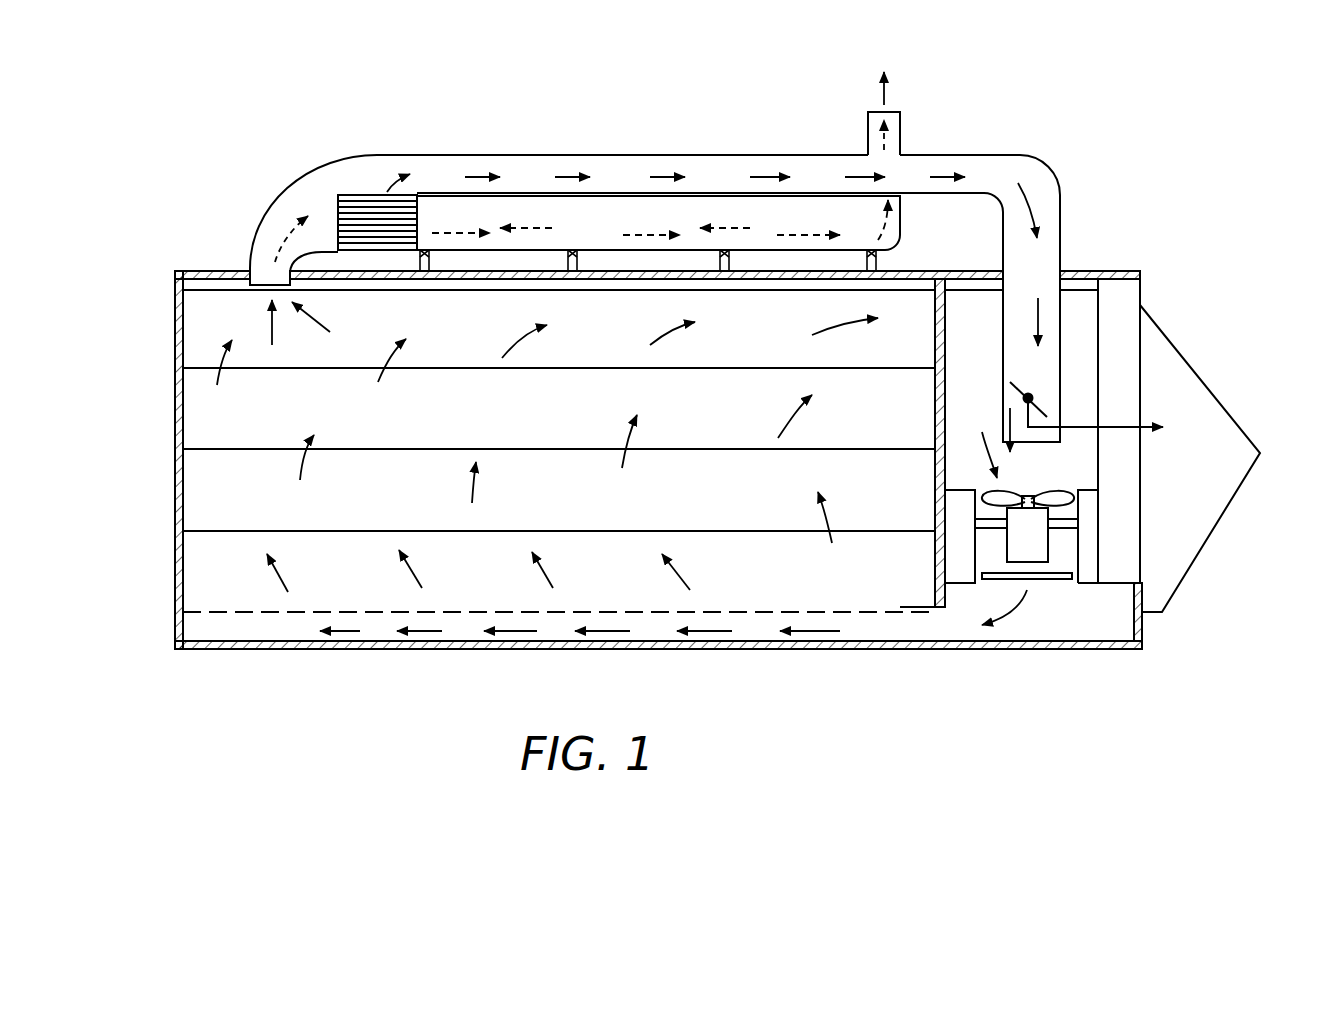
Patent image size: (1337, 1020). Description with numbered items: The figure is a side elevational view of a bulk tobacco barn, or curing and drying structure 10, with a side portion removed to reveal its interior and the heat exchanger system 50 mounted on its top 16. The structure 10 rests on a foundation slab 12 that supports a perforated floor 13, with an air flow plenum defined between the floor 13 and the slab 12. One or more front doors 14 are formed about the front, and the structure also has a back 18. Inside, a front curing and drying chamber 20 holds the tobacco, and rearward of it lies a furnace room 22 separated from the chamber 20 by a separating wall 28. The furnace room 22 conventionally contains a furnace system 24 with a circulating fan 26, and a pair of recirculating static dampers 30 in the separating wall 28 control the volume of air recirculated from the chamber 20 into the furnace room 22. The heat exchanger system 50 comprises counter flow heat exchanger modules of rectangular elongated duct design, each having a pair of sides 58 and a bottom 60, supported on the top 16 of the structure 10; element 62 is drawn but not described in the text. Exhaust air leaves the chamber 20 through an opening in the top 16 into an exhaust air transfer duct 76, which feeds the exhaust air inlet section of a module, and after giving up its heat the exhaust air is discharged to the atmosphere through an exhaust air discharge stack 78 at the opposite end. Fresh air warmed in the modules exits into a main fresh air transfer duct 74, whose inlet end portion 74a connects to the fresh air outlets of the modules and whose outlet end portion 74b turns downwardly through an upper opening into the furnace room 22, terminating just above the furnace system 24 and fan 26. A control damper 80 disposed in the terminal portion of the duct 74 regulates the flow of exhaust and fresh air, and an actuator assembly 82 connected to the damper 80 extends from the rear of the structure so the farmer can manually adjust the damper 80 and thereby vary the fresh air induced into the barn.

The curing and drying structure 10 is at (622, 105).
The foundation slab 12 is at (428, 650).
The perforated floor 13 is at (219, 614).
The front door 14 is at (176, 598).
The top 16 is at (196, 271).
The back 18 is at (1220, 516).
The front curing and drying chamber 20 is at (266, 486).
The furnace room 22 is at (1077, 306).
The furnace system 24 is at (1043, 480).
The circulating fan 26 is at (1058, 499).
The separating wall 28 is at (935, 556).
The recirculating static damper 30 is at (968, 386).
The heat exchanger system 50 is at (734, 143).
The side 58 is at (488, 226).
The bottom 60 is at (492, 243).
The baffles 62 is at (712, 256).
The main fresh air transfer duct 74 is at (1011, 146).
The inlet end portion 74a is at (377, 155).
The outlet end portion 74b is at (1060, 333).
The exhaust air transfer duct 76 is at (287, 213).
The exhaust air discharge stack 78 is at (900, 133).
The control damper 80 is at (1048, 417).
The actuator assembly 82 is at (1166, 427).